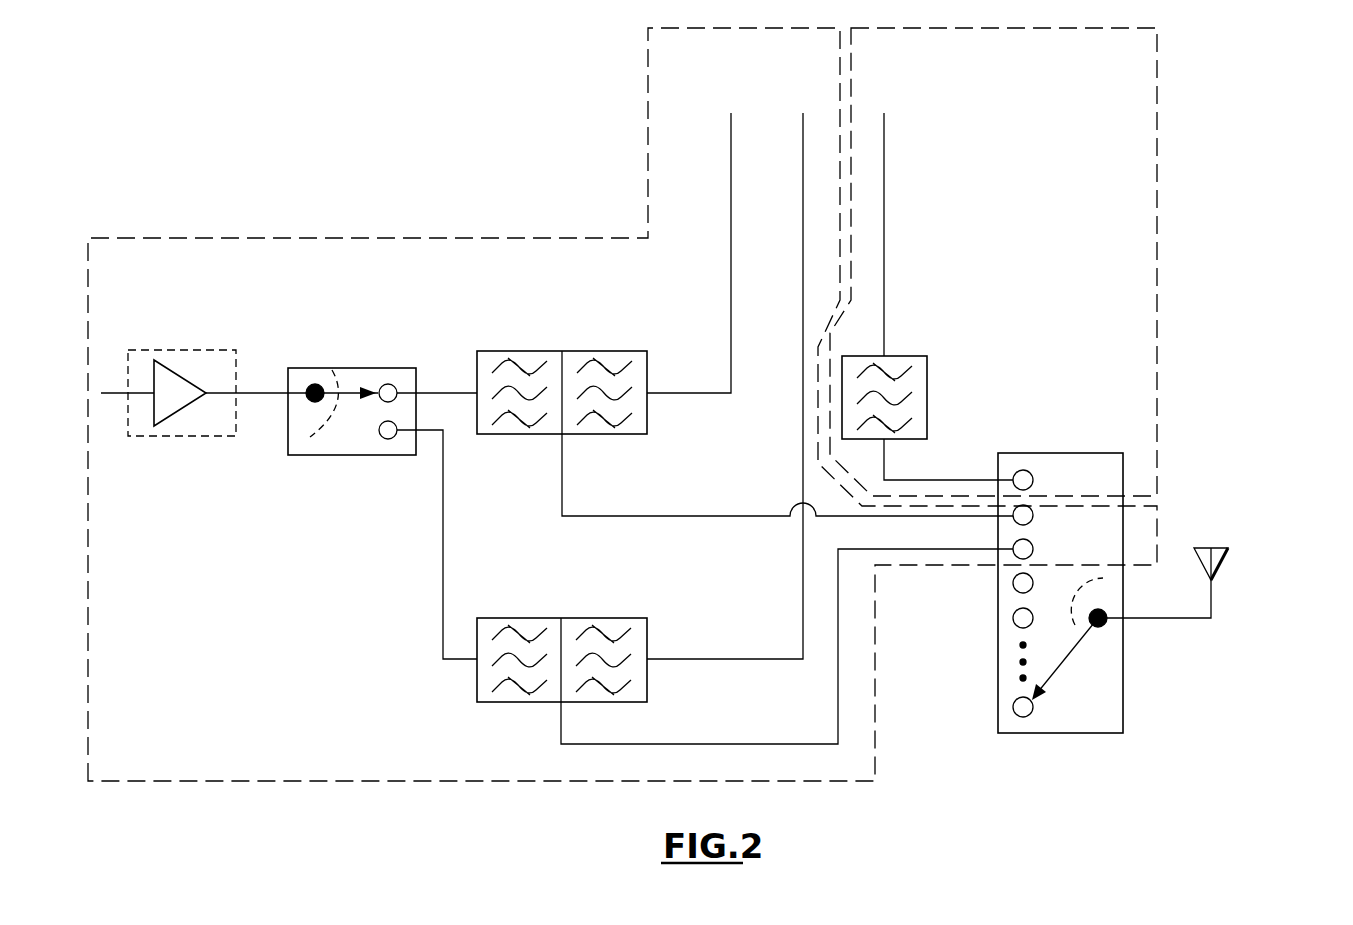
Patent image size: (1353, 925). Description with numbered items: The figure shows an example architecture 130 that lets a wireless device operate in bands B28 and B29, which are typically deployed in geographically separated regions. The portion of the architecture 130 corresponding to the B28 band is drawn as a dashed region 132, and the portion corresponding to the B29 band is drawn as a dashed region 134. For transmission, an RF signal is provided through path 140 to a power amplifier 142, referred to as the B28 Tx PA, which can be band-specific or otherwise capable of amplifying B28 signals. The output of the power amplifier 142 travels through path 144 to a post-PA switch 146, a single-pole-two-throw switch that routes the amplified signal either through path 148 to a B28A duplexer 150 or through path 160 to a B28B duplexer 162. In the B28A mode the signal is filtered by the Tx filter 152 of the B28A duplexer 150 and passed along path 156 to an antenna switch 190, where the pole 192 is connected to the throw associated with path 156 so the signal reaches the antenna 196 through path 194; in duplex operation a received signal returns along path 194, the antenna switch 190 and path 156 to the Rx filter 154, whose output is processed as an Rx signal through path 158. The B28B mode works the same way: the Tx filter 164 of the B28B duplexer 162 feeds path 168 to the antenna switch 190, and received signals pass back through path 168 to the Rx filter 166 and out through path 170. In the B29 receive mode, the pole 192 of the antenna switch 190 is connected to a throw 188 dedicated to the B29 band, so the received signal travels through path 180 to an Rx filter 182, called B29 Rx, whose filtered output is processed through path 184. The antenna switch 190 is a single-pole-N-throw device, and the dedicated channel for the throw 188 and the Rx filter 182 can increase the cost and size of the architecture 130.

The architecture 130 is at (512, 135).
The B28 portion of the architecture 132 is at (384, 238).
The B29 portion of the architecture 134 is at (1158, 248).
The path 140 is at (103, 395).
The power amplifier 142 is at (205, 437).
The path 144 is at (248, 393).
The post-PA switch 146 is at (352, 455).
The path 148 is at (455, 390).
The B28A duplexer 150 is at (542, 465).
The Tx filter 152 is at (490, 350).
The Rx filter 154 is at (633, 350).
The path 156 is at (680, 515).
The path 158 is at (731, 287).
The path 160 is at (443, 605).
The B28B duplexer 162 is at (542, 735).
The Tx filter 164 is at (502, 617).
The Rx filter 166 is at (633, 617).
The path 168 is at (730, 744).
The path 170 is at (724, 659).
The path 180 is at (944, 480).
The Rx filter 182 is at (927, 393).
The path 184 is at (884, 262).
The throw 188 is at (1048, 480).
The antenna switch 190 is at (1078, 733).
The pole 192 is at (1103, 642).
The path 194 is at (1190, 620).
The antenna 196 is at (1238, 590).